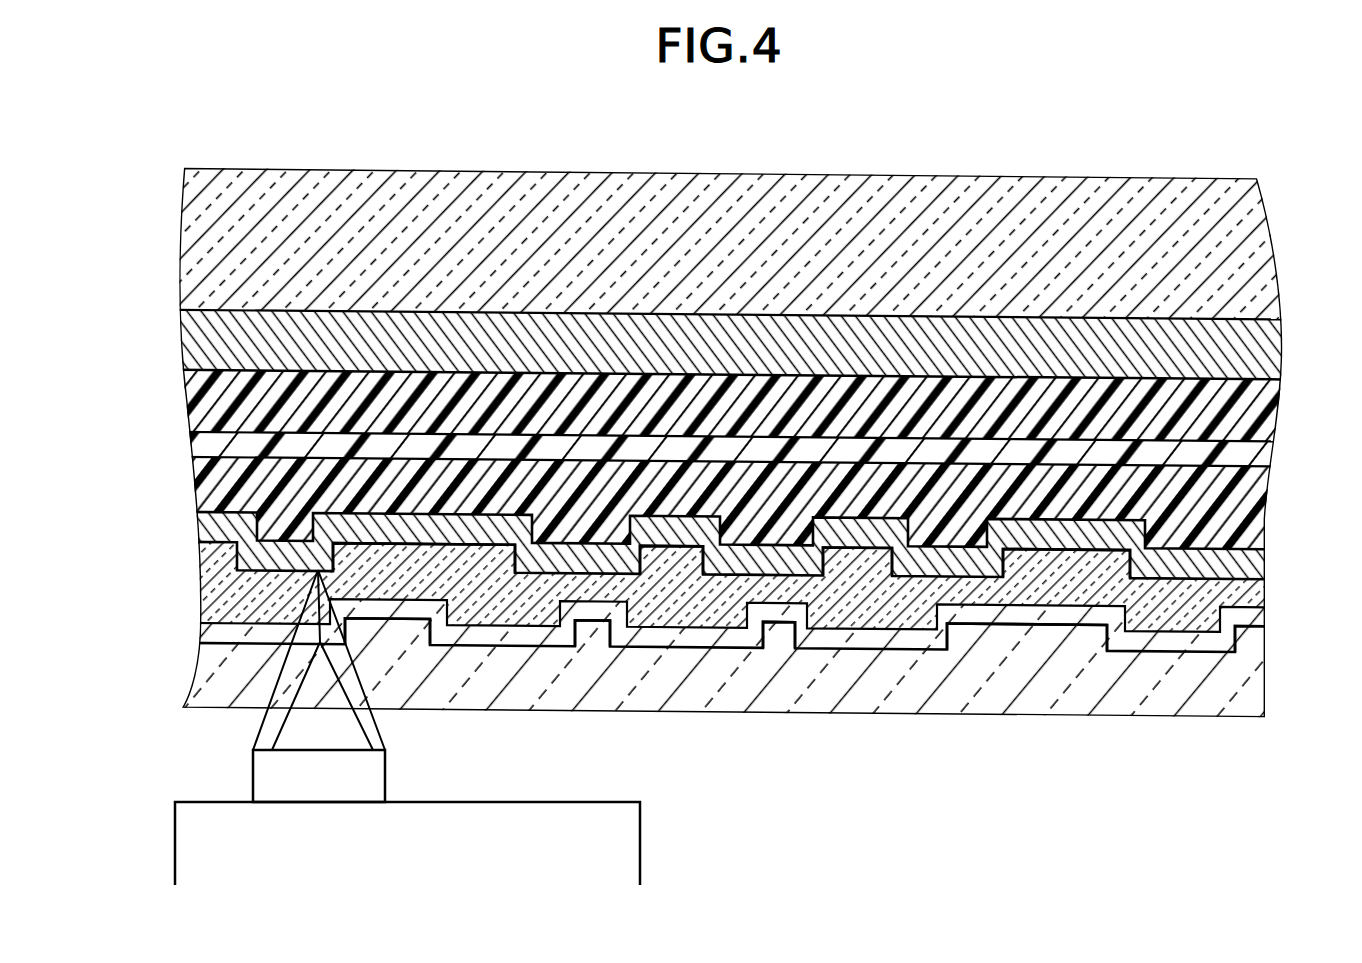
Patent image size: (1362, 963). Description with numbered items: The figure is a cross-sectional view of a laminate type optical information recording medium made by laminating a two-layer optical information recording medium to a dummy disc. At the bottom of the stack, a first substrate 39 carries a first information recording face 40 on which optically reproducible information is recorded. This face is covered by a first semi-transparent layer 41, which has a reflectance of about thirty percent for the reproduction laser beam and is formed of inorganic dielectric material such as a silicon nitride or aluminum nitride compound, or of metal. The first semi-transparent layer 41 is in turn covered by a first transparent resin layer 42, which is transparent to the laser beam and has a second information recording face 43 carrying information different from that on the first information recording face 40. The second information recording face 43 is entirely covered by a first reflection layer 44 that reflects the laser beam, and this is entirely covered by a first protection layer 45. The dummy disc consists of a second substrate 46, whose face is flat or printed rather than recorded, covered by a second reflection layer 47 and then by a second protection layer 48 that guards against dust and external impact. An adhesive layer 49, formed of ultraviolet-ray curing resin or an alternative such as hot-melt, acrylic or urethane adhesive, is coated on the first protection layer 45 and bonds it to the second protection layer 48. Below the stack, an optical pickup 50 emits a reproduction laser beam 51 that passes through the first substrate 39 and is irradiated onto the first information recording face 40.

The first substrate 39 is at (1233, 678).
The first information recording face 40 is at (1045, 622).
The first semi-transparent layer 41 is at (1188, 640).
The first transparent resin layer 42 is at (723, 600).
The second information recording face 43 is at (1108, 552).
The first reflection layer 44 is at (627, 562).
The first protection layer 45 is at (1240, 520).
The second substrate 46 is at (280, 200).
The second reflection layer 47 is at (590, 335).
The second protection layer 48 is at (855, 385).
The adhesive layer 49 is at (1265, 430).
The optical pickup 50 is at (212, 800).
The reproduction laser beam 51 is at (348, 724).